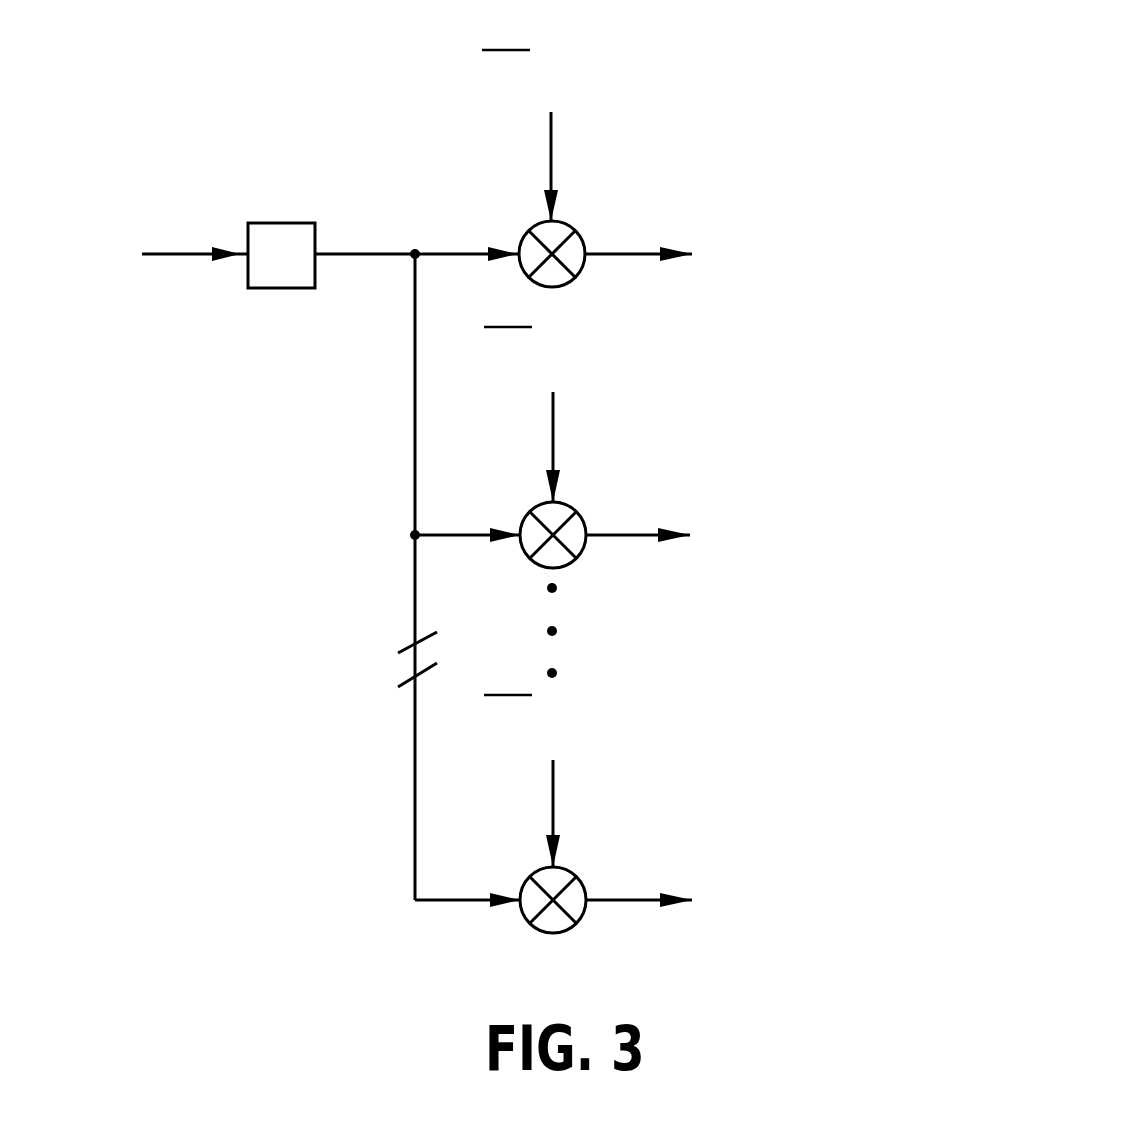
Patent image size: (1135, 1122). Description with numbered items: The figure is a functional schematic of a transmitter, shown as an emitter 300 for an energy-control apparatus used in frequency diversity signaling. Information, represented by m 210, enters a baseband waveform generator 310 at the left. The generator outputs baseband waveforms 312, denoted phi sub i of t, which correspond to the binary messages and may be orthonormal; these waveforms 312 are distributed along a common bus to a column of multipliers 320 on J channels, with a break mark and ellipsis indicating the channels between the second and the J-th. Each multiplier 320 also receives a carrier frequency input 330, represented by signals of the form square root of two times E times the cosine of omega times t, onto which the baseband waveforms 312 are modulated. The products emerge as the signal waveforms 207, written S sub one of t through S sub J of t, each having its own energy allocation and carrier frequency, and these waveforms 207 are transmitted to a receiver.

The emitter 300 is at (790, 114).
The information m 210 is at (186, 254).
The baseband waveform generator 310 is at (280, 223).
The baseband waveforms 312 is at (358, 254).
The multipliers 320 is at (540, 223).
The carrier frequency input 330 is at (556, 146).
The signal waveforms 207 is at (616, 252).